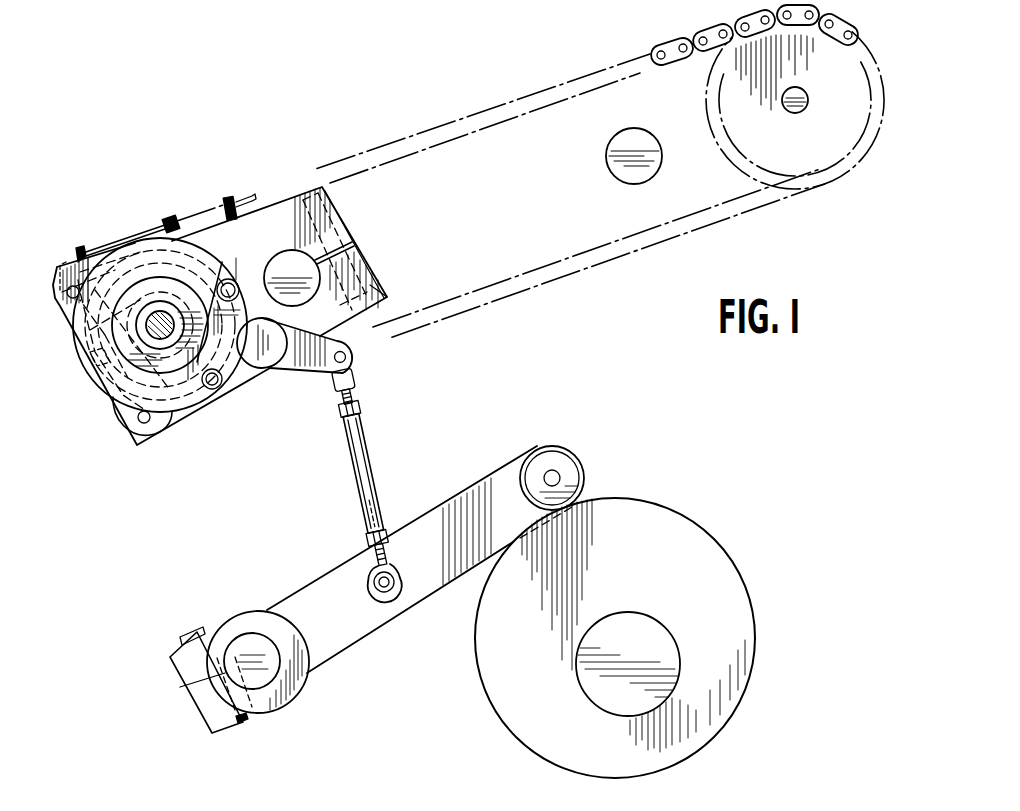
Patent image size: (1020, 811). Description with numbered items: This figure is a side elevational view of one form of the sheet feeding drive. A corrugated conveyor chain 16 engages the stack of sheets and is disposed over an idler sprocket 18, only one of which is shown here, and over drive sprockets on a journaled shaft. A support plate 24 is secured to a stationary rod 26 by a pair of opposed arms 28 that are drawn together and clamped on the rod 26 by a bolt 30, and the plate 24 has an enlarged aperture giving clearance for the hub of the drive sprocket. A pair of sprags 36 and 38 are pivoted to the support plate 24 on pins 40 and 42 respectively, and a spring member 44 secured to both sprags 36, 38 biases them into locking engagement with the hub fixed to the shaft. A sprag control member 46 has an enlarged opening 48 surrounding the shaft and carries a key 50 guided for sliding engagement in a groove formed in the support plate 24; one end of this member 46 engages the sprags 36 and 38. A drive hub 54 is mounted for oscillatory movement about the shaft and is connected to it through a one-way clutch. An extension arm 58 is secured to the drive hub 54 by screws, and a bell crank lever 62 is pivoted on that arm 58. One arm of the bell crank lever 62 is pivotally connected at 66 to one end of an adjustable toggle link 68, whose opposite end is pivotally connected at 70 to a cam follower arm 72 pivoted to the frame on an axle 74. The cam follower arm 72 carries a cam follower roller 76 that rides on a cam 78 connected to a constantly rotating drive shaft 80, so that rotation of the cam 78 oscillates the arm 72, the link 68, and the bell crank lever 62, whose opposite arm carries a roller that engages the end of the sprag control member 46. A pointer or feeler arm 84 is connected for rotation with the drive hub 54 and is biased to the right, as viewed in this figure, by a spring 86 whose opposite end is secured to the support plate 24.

The corrugated conveyor chain 16 is at (688, 38).
The idler sprocket 18 is at (736, 50).
The support plate 24 is at (233, 222).
The stationary rod 26 is at (266, 265).
The opposed arms 28 is at (356, 244).
The bolt 30 is at (376, 286).
The sprag 36 is at (52, 302).
The sprag 38 is at (120, 428).
The pin 40 is at (66, 262).
The pin 42 is at (162, 426).
The spring member 44 is at (93, 364).
The sprag control member 46 is at (130, 240).
The enlarged opening 48 is at (170, 304).
The key 50 is at (141, 322).
The drive hub 54 is at (203, 252).
The extension arm 58 is at (232, 392).
The bell crank lever 62 is at (314, 366).
The pivotal connection 66 is at (358, 364).
The adjustable link 68 is at (371, 456).
The pivotal connection 70 is at (400, 583).
The cam follower arm 72 is at (493, 472).
The axle 74 is at (246, 640).
The cam follower roller 76 is at (580, 484).
The cam 78 is at (698, 524).
The drive shaft 80 is at (680, 662).
The pointer or feeler arm 84 is at (82, 248).
The spring 86 is at (233, 198).